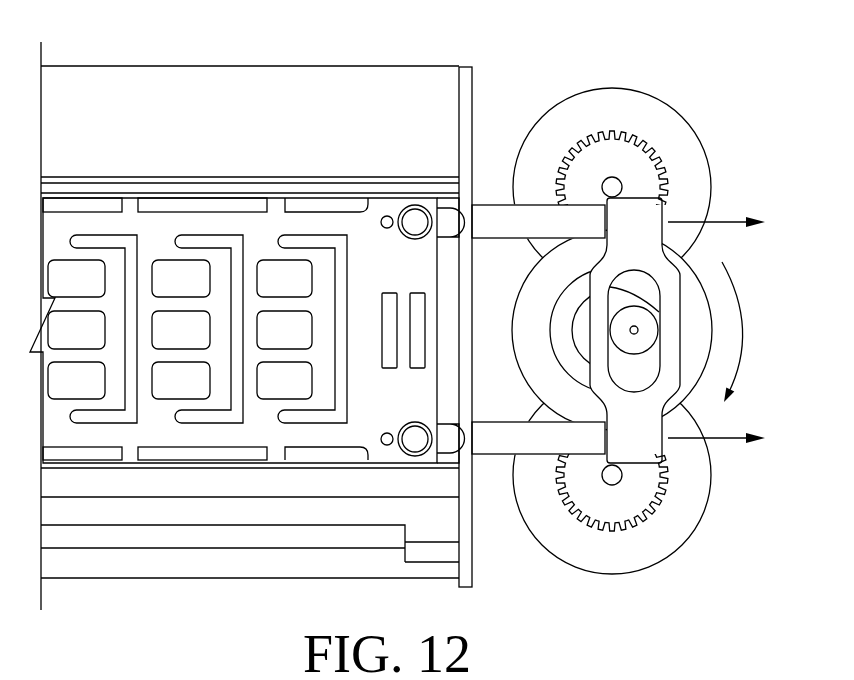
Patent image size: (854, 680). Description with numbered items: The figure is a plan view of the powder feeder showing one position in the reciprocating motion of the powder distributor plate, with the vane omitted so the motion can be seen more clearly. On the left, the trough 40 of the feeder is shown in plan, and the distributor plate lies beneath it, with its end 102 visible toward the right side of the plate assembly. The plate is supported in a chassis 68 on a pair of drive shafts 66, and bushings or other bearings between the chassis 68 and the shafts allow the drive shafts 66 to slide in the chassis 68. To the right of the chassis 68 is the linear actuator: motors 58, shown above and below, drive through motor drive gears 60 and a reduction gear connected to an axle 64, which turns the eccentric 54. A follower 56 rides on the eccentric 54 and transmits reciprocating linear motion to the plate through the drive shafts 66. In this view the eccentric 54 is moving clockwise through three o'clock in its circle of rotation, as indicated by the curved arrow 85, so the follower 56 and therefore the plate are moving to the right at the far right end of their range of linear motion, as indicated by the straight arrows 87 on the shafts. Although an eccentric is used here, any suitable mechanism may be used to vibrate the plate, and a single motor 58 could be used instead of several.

The trough 40 is at (132, 82).
The end 102 is at (372, 212).
The chassis 68 is at (473, 102).
The drive shafts 66 is at (495, 210).
The motors 58 is at (688, 125).
The motor drive gears 60 is at (612, 135).
The eccentric 54 is at (618, 322).
The follower 56 is at (597, 352).
The axle 64 is at (577, 337).
The straight arrows 87 is at (715, 221).
The curved arrows 85 is at (742, 311).